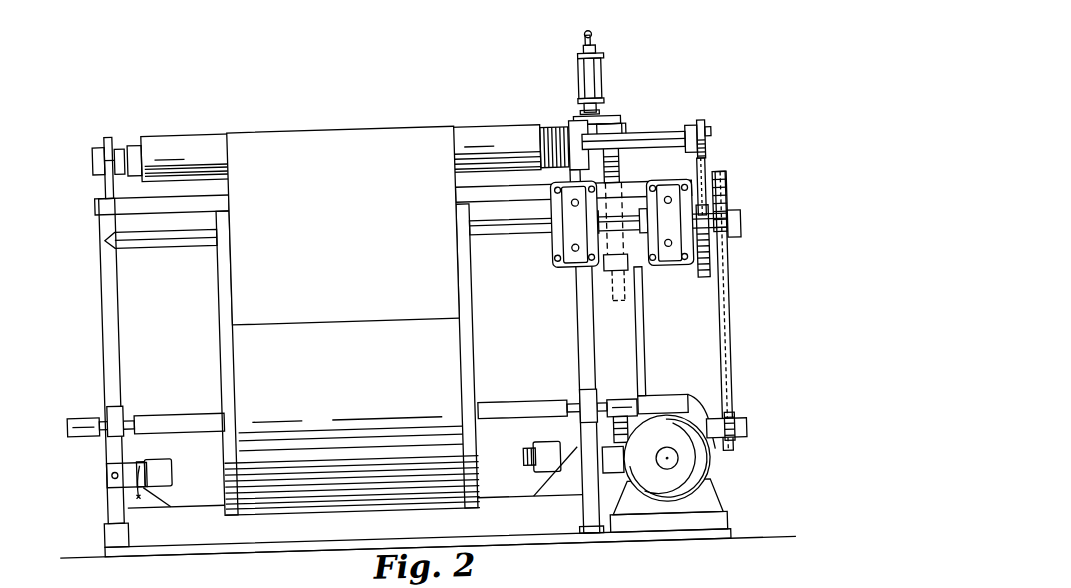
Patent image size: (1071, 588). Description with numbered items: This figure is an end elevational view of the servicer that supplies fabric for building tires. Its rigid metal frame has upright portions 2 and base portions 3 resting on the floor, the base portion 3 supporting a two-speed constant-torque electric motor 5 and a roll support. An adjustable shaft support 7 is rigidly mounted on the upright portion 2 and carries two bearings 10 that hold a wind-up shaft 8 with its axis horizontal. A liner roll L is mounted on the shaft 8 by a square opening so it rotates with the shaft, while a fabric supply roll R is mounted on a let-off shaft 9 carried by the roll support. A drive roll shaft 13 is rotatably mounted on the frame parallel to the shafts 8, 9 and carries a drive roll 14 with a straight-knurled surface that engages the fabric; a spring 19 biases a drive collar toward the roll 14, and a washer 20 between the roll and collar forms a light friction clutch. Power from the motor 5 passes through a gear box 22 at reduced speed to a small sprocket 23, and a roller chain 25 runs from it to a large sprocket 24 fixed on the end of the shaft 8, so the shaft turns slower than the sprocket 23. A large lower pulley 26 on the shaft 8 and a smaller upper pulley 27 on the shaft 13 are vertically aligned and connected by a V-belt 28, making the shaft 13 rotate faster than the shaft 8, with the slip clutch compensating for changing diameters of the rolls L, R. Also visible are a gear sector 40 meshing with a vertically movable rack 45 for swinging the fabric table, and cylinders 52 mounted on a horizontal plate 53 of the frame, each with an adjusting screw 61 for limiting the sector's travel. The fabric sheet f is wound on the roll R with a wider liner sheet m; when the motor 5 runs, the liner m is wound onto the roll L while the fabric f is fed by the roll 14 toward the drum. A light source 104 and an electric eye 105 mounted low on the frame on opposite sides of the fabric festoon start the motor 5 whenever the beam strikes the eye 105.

The upright portion 2 is at (101, 288).
The base portion 3 is at (510, 528).
The electric motor 5 is at (706, 476).
The adjustable shaft support 7 is at (655, 278).
The wind-up shaft 8 is at (173, 240).
The let-off shaft 9 is at (193, 408).
The bearings 10 is at (571, 220).
The drive roll shaft 13 is at (656, 136).
The drive roll 14 is at (191, 128).
The spring 19 is at (562, 122).
The washer 20 is at (557, 122).
The gear box 22 is at (671, 400).
The small sprocket 23 is at (738, 425).
The large sprocket 24 is at (724, 200).
The roller chain 25 is at (728, 347).
The lower pulley 26 is at (699, 283).
The upper pulley 27 is at (713, 133).
The V-belt 28 is at (713, 164).
The gear sector 40 is at (628, 137).
The rack 45 is at (625, 187).
The cylinder 52 is at (612, 75).
The horizontal plate 53 is at (610, 120).
The screw 61 is at (593, 40).
The light source 104 is at (168, 464).
The electric eye 105 is at (539, 446).
The liner roll L is at (218, 246).
The fabric supply roll R is at (479, 379).
The fabric sheet f is at (245, 335).
The liner sheet m is at (471, 299).